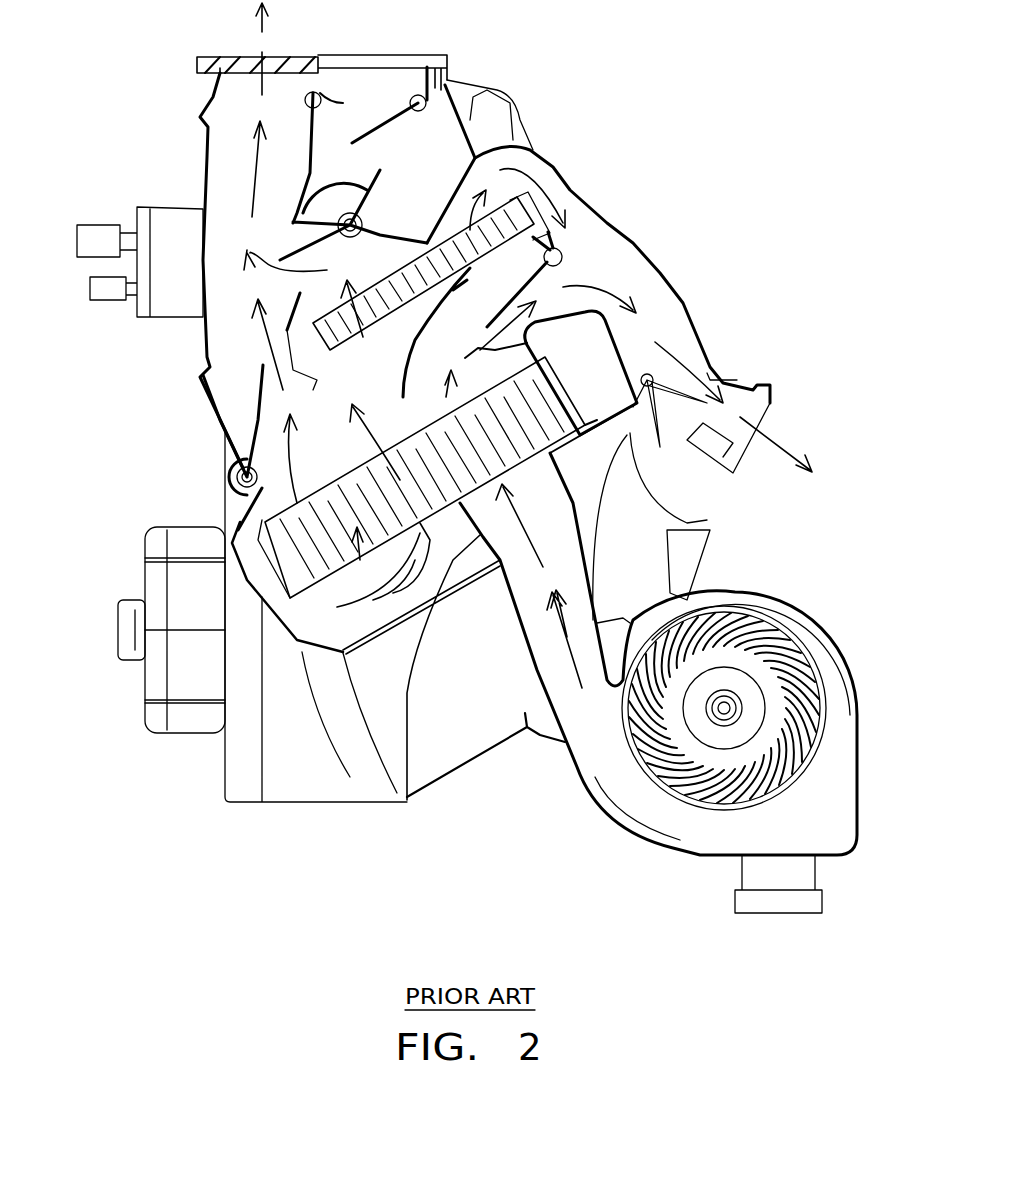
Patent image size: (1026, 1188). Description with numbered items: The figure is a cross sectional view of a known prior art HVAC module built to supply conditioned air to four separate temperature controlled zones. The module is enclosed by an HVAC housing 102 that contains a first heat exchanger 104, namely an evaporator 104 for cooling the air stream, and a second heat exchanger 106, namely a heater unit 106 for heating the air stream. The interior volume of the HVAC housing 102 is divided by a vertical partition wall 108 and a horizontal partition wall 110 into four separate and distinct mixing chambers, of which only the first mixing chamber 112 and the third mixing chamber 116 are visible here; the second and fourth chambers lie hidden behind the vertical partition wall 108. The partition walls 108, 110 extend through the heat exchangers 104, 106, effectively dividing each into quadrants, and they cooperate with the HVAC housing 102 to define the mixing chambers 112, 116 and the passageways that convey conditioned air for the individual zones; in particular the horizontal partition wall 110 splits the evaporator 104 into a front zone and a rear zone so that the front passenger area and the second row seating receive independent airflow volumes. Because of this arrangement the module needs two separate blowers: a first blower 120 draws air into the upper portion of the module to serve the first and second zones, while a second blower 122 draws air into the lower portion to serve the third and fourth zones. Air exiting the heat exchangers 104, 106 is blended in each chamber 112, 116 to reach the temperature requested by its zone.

The HVAC housing 102 is at (647, 247).
The first heat exchanger 104 is at (273, 547).
The second heat exchanger 106 is at (327, 327).
The vertical partition wall 108 is at (420, 275).
The horizontal partition wall 110 is at (397, 390).
The first mixing chamber 112 is at (233, 315).
The third mixing chamber 116 is at (647, 300).
The first blower 120 is at (177, 720).
The second blower 122 is at (750, 623).